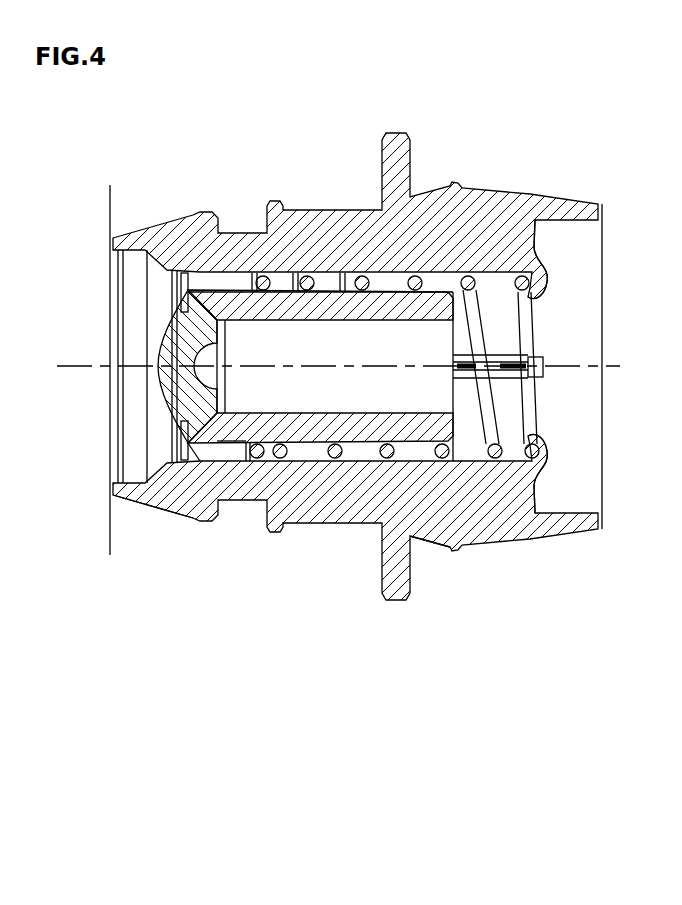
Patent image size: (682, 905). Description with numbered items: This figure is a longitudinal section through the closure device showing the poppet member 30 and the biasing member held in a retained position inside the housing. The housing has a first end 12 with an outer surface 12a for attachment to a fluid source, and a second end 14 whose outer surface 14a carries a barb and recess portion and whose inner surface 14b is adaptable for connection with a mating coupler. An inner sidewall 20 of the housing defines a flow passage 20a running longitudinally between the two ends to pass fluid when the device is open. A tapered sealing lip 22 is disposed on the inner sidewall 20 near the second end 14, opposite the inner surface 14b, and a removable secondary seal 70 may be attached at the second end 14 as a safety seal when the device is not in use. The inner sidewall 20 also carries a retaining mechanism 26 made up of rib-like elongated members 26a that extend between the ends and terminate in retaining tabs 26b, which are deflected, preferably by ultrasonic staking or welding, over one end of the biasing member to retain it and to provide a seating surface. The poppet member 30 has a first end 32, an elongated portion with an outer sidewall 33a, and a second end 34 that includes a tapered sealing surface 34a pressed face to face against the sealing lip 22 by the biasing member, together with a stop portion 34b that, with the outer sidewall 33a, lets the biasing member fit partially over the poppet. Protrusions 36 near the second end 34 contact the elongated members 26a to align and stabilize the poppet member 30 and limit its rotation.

The first end 12 is at (602, 513).
The outer surface 12a is at (520, 540).
The second end 14 is at (130, 503).
The outer surface 14a is at (197, 522).
The inner surface 14b is at (157, 262).
The inner sidewall 20 is at (500, 297).
The flow passage 20a is at (570, 295).
The sealing lip 22 is at (193, 288).
The retaining mechanism 26 is at (538, 232).
The elongated members 26a is at (345, 275).
The retaining tabs 26b is at (547, 265).
The poppet member 30 is at (343, 440).
The first end 32 is at (448, 295).
The outer sidewall 33a is at (397, 292).
The second end 34 is at (158, 368).
The sealing surface 34a is at (197, 457).
The stop portion 34b is at (262, 455).
The protrusions 36 is at (238, 458).
The secondary seal 70 is at (110, 413).